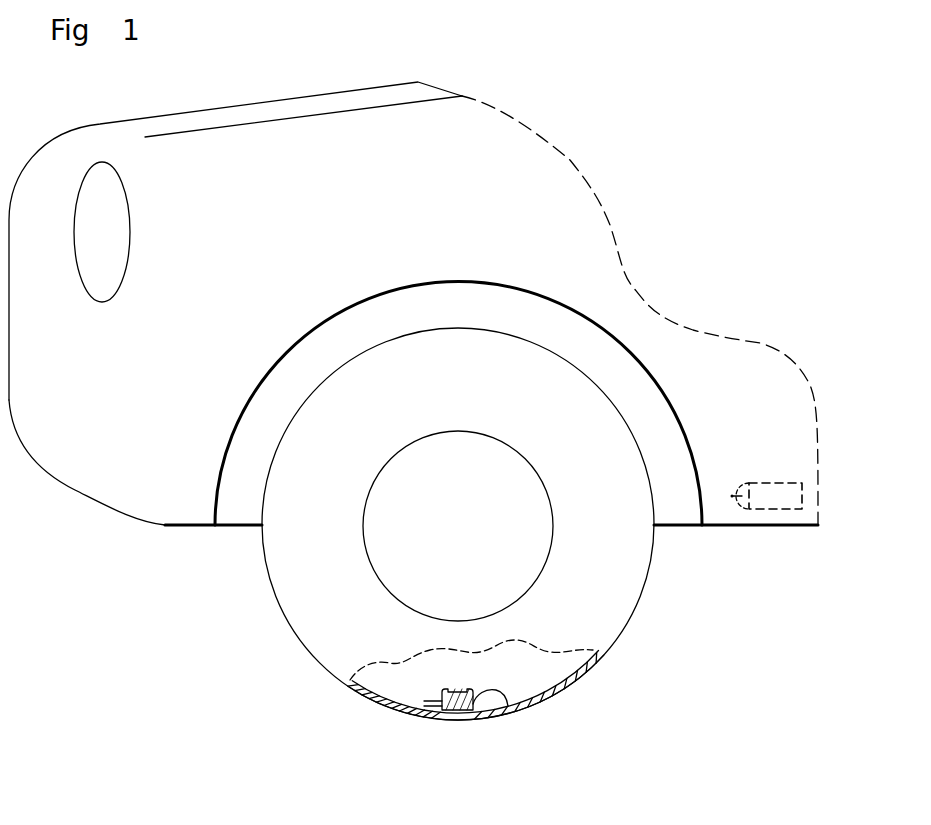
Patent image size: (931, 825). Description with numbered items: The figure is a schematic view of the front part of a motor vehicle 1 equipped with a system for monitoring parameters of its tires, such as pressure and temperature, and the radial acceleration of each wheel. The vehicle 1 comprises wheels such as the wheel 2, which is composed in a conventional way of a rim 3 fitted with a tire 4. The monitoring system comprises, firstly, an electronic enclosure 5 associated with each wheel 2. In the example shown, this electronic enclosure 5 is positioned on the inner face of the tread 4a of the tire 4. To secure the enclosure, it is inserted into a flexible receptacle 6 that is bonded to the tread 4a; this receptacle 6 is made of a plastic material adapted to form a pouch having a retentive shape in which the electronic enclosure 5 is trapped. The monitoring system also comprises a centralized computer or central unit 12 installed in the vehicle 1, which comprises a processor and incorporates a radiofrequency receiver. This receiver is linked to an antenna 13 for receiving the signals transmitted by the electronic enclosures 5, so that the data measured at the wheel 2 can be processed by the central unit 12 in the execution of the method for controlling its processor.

The vehicle 1 is at (113, 485).
The wheel 2 is at (282, 650).
The rim 3 is at (402, 573).
The tire 4 is at (630, 585).
The tread 4a is at (572, 678).
The electronic enclosure 5 is at (452, 718).
The flexible receptacle 6 is at (507, 706).
The central unit 12 is at (773, 509).
The antenna 13 is at (743, 509).